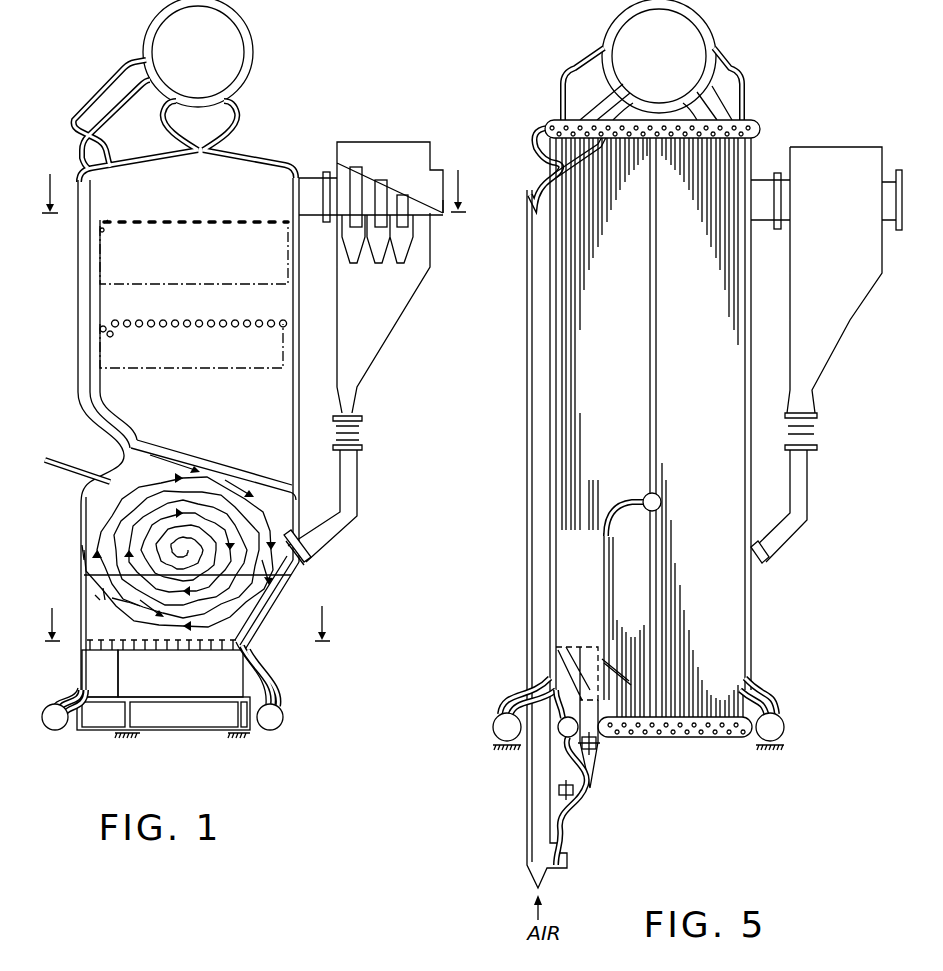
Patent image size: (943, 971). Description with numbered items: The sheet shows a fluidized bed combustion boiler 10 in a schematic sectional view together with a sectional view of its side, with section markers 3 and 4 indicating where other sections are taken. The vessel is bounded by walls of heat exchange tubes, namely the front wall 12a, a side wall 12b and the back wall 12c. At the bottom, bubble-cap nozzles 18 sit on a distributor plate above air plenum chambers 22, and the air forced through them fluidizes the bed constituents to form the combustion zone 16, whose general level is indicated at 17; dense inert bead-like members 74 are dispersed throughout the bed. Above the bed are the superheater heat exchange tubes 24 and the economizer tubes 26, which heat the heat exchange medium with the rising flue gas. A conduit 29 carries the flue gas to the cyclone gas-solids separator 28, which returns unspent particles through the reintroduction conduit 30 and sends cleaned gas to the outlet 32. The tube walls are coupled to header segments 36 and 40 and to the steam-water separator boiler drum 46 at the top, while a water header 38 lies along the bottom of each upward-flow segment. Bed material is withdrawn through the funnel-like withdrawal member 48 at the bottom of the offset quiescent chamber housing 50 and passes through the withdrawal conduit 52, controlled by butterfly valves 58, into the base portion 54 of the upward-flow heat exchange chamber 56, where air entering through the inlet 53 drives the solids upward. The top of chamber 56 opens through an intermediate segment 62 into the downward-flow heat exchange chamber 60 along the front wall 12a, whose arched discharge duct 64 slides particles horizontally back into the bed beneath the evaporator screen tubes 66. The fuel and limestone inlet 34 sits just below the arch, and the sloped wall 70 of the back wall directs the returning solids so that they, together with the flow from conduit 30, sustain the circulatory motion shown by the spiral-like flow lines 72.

In FIG. 1, the fluidized bed combustion boiler 10 is at (322, 81).
In FIG. 5, the fluidized bed combustion boiler 10 is at (820, 104).
In FIG. 1, the front wall 12a is at (76, 388).
In FIG. 5, the front wall 12a is at (755, 352).
In FIG. 5, the side wall 12b is at (672, 404).
In FIG. 1, the back wall 12c is at (300, 416).
In FIG. 1, the combustion zone 16 is at (94, 594).
In FIG. 1, the general level of fluidized bed 17 is at (83, 545).
In FIG. 1, the nozzles 18 is at (110, 598).
In FIG. 1, the air plenum chambers 22 is at (90, 685).
In FIG. 1, the superheater heat exchange tubes 24 is at (198, 356).
In FIG. 1, the economizer tubes 26 is at (198, 262).
In FIG. 1, the gas-solids separator 28 is at (412, 138).
In FIG. 5, the gas-solids separator 28 is at (843, 147).
In FIG. 1, the conduit 29 is at (302, 180).
In FIG. 1, the reintroduction conduit 30 is at (330, 545).
In FIG. 1, the outlet 32 is at (445, 214).
In FIG. 1, the inlet 34 is at (52, 472).
In FIG. 1, the header segment 36 is at (55, 731).
In FIG. 5, the header segment 36 is at (492, 727).
In FIG. 5, the water header 38 is at (582, 768).
In FIG. 1, the header segment 40 is at (270, 731).
In FIG. 5, the header segment 40 is at (785, 735).
In FIG. 1, the steam-water separator boiler drum 46 is at (253, 41).
In FIG. 5, the steam-water separator boiler drum 46 is at (713, 36).
In FIG. 5, the funnel-like withdrawal member 48 is at (581, 654).
In FIG. 5, the quiescent chamber housing 50 is at (562, 577).
In FIG. 5, the withdrawal conduit 52 is at (606, 766).
In FIG. 5, the inlet 53 is at (546, 887).
In FIG. 5, the base portion 54 is at (537, 791).
In FIG. 5, the upward-flow heat exchange chamber 56 is at (539, 457).
In FIG. 5, the butterfly valves 58 is at (598, 742).
In FIG. 1, the downward-flow heat exchange chamber 60 is at (88, 296).
In FIG. 1, the intermediate segment 62 is at (100, 197).
In FIG. 5, the intermediate segment 62 is at (539, 200).
In FIG. 1, the arched discharge duct 64 is at (104, 457).
In FIG. 1, the evaporator screen tubes 66 is at (143, 433).
In FIG. 1, the sloped wall 70 is at (270, 602).
In FIG. 1, the spiral-like flow lines 72 is at (270, 530).
In FIG. 1, the bead-like members 74 is at (103, 588).
In FIG. 1, the section line 3- 3 is at (186, 608).
In FIG. 1, the section line 4- 4 is at (253, 175).